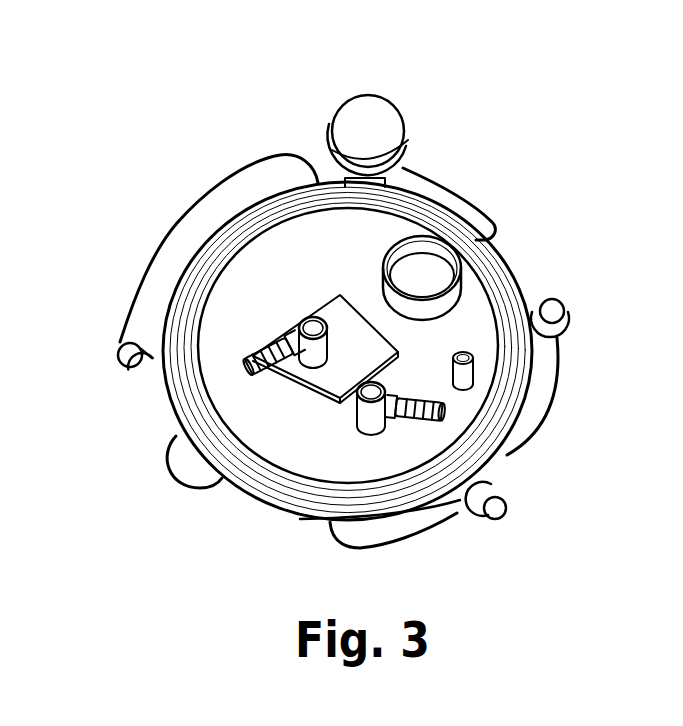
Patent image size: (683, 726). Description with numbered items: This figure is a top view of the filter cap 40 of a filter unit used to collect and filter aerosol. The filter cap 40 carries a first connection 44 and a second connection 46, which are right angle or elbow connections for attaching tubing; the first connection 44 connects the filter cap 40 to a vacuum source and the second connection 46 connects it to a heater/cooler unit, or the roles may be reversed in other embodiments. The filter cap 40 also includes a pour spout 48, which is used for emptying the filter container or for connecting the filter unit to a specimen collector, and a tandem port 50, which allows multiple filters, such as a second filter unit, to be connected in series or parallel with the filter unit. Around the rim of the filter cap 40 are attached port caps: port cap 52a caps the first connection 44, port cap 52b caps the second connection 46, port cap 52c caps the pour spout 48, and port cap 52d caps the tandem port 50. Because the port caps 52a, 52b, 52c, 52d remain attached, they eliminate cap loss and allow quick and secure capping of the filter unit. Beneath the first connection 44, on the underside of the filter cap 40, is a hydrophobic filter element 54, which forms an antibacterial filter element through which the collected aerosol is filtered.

The filter cap 40 is at (566, 98).
The first connection 44 is at (257, 360).
The second connection 46 is at (358, 412).
The pour spout 48 is at (447, 277).
The tandem port 50 is at (467, 380).
The port cap 52a is at (118, 350).
The port cap 52b is at (490, 512).
The port cap 52c is at (370, 110).
The port cap 52d is at (571, 316).
The hydrophobic filter element 54 is at (340, 308).